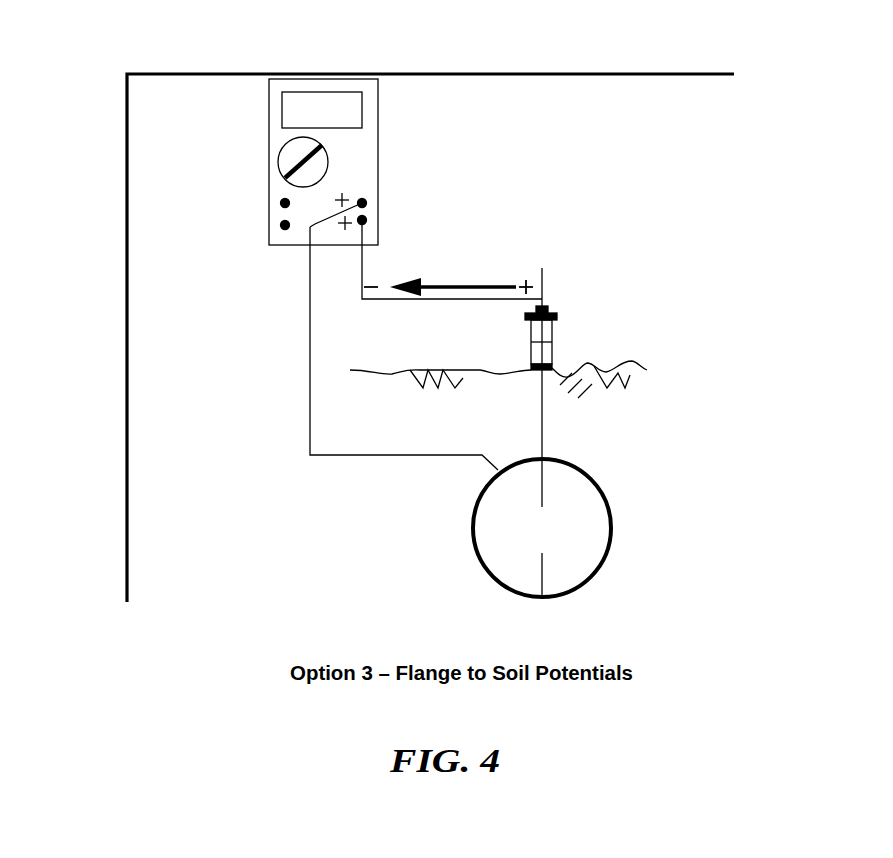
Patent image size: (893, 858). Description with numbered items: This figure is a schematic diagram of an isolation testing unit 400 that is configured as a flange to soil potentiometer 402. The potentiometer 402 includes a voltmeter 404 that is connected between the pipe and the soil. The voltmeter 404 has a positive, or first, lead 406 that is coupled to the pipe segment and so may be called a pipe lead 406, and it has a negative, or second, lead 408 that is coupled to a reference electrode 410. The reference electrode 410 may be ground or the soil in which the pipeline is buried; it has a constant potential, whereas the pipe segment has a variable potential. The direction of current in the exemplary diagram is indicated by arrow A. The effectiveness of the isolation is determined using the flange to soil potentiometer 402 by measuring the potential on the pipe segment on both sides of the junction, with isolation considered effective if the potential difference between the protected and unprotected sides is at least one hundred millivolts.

The isolation testing unit 400 is at (586, 39).
The flange to soil potentiometer 402 is at (127, 228).
The voltmeter 404 is at (269, 143).
The pipe lead 406 is at (310, 412).
The negative lead 408 is at (363, 282).
The reference electrode 410 is at (557, 313).
The arrow A is at (442, 285).